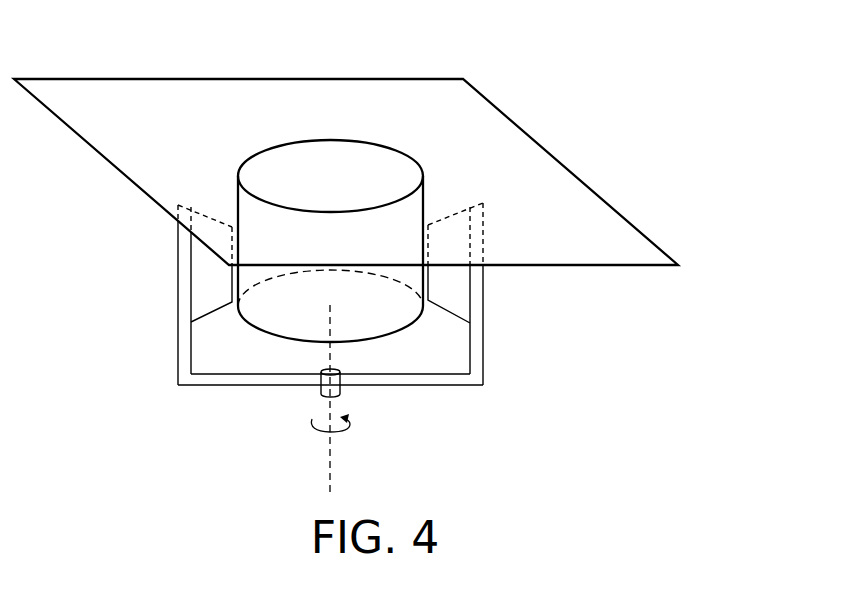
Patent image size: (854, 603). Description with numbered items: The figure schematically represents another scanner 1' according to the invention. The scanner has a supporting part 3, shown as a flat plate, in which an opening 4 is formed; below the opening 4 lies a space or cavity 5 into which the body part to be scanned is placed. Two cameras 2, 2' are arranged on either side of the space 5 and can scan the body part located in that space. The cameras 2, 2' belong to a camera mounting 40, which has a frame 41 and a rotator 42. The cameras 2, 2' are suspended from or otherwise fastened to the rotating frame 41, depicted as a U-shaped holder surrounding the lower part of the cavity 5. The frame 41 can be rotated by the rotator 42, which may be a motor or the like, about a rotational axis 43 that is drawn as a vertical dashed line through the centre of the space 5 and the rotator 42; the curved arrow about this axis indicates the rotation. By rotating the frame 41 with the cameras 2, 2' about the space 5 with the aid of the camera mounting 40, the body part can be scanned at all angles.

The scanner 1' is at (723, 269).
The camera 2 is at (185, 270).
The camera 2' is at (480, 269).
The supporting part 3 is at (537, 163).
The opening 4 is at (338, 160).
The space or cavity 5 is at (340, 256).
The camera mounting 40 is at (390, 334).
The frame 41 is at (200, 382).
The rotator 42 is at (342, 392).
The rotational axis 43 is at (330, 478).